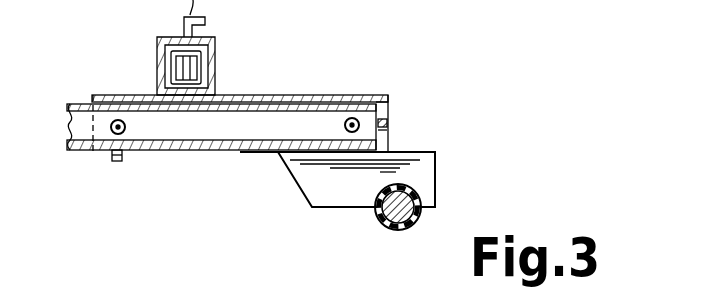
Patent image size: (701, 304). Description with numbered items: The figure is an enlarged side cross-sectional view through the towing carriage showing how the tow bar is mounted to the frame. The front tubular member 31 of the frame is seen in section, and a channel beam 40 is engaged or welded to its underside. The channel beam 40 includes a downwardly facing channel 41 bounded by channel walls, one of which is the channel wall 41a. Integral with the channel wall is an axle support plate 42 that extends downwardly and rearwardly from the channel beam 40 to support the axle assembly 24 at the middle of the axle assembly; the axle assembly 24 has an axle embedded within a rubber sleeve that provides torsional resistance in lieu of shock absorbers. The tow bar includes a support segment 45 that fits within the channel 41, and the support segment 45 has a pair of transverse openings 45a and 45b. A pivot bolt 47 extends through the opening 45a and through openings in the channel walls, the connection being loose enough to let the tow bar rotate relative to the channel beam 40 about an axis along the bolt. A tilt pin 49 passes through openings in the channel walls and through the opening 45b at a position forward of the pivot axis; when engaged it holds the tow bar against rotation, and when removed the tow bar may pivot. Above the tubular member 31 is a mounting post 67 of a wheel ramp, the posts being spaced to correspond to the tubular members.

The axle assembly 24 is at (404, 238).
The tubular member 31 is at (215, 46).
The channel beam 40 is at (390, 94).
The channel 41 is at (389, 109).
The channel wall 41a is at (387, 122).
The axle support plate 42 is at (319, 193).
The support segment 45 is at (78, 105).
The transverse opening 45a is at (356, 118).
The transverse opening 45b is at (117, 119).
The pivot bolt 47 is at (389, 133).
The tilt pin 49 is at (110, 129).
The mounting post 67 is at (165, 62).